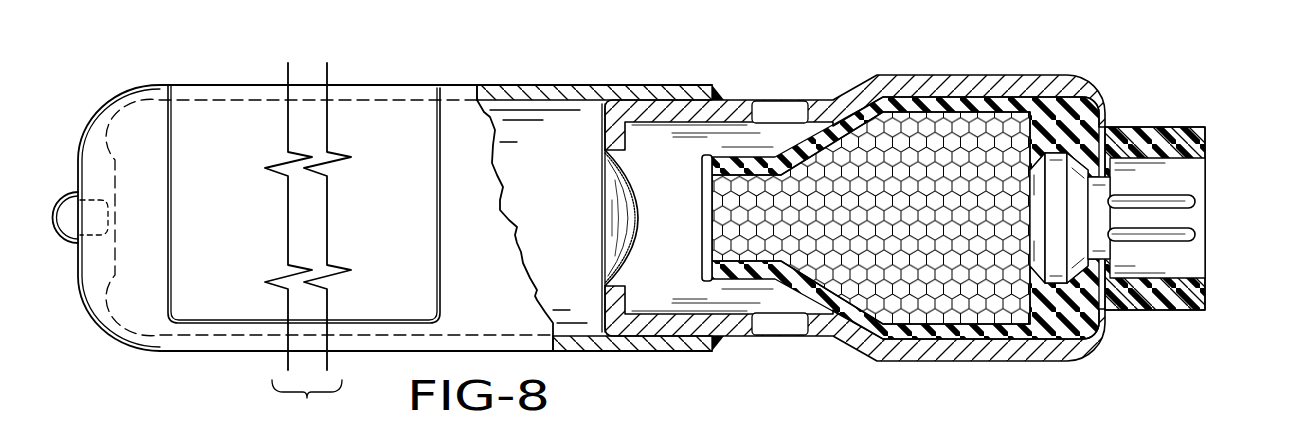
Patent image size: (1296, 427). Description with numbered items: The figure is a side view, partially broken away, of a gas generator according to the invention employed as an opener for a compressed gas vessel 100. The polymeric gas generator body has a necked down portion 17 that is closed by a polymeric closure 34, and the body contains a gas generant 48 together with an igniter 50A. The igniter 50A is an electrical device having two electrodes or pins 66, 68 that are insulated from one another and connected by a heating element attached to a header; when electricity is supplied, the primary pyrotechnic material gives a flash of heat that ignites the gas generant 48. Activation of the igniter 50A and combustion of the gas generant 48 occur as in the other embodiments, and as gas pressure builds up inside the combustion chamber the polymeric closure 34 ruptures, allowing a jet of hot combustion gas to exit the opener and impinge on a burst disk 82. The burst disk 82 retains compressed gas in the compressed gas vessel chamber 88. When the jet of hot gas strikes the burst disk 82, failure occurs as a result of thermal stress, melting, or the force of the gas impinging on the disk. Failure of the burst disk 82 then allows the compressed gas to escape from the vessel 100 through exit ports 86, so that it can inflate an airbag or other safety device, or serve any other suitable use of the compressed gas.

The compressed gas vessel 100 is at (1113, 70).
The compressed gas vessel chamber 88 is at (543, 158).
The polymeric closure 34 is at (700, 197).
The exit ports 86 is at (778, 118).
The necked down portion 17 is at (743, 267).
The burst disk 82 is at (633, 245).
The gas generant 48 is at (878, 260).
The igniter 50A is at (1003, 220).
The electrode or pin 66 is at (1155, 202).
The electrode or pin 68 is at (1155, 232).